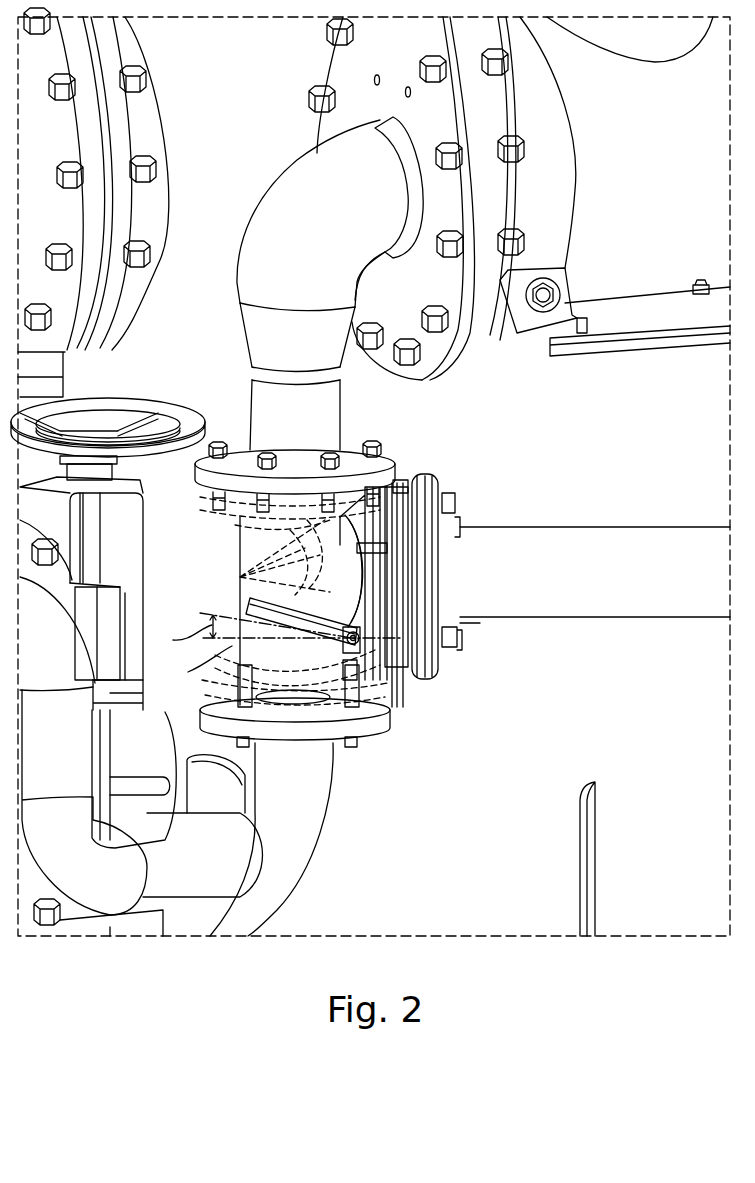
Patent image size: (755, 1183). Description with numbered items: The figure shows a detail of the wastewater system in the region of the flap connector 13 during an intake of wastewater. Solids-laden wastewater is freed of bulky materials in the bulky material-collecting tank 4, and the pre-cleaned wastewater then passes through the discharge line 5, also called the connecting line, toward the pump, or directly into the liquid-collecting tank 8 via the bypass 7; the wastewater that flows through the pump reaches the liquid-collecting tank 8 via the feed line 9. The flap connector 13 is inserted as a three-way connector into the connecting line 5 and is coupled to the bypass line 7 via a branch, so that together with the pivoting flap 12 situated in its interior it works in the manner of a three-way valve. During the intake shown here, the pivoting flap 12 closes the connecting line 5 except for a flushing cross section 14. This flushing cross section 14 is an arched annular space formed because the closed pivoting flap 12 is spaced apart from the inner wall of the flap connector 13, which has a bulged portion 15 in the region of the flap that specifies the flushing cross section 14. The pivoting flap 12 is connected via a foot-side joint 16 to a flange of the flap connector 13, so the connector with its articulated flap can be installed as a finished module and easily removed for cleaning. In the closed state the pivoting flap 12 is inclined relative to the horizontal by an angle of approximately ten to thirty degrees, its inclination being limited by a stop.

The bulky material-collecting tank 4 is at (603, 277).
The discharge line 5 is at (268, 398).
The bypass 7 is at (508, 552).
The liquid-collecting tank 8 is at (566, 692).
The feed line 9 is at (201, 804).
The pivoting flap 12 is at (312, 619).
The flap connector 13 is at (235, 540).
The flushing cross section 14 is at (235, 607).
The bulged portion 15 is at (235, 585).
The foot-side joint 16 is at (360, 645).